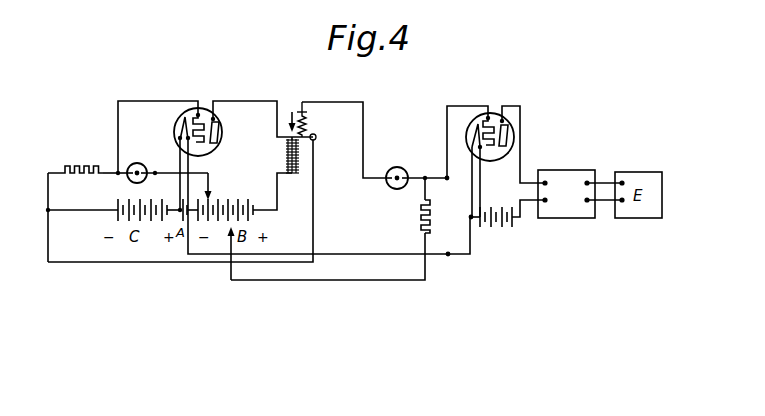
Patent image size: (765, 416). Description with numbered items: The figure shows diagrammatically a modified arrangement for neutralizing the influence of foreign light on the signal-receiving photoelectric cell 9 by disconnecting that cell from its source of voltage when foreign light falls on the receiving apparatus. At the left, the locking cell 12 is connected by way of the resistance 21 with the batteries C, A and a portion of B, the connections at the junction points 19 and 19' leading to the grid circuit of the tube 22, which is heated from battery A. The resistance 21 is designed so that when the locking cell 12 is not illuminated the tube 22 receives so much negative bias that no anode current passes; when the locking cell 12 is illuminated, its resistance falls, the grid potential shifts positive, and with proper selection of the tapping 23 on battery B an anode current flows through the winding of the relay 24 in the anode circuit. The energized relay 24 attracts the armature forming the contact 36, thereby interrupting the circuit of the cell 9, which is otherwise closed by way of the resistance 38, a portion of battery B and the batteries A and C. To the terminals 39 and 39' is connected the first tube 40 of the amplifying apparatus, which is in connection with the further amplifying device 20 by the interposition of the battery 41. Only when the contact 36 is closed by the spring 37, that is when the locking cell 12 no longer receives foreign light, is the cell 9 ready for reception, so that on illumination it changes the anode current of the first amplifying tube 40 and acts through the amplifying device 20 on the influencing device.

The resistance 21 is at (75, 162).
The junction terminal 19 is at (127, 161).
The locking cell 12 is at (139, 163).
The junction terminal 19' is at (163, 162).
The tube 22 is at (222, 130).
The tapping 23 is at (211, 195).
The relay 24 is at (285, 150).
The contact 36 is at (289, 127).
The spring 37 is at (308, 126).
The photoelectric cell 9 is at (401, 167).
The terminal 39 is at (440, 192).
The resistance 38 is at (421, 211).
The terminal 39' is at (458, 267).
The first tube 40 is at (509, 141).
The battery 41 is at (497, 223).
The amplifying device 20 is at (566, 194).